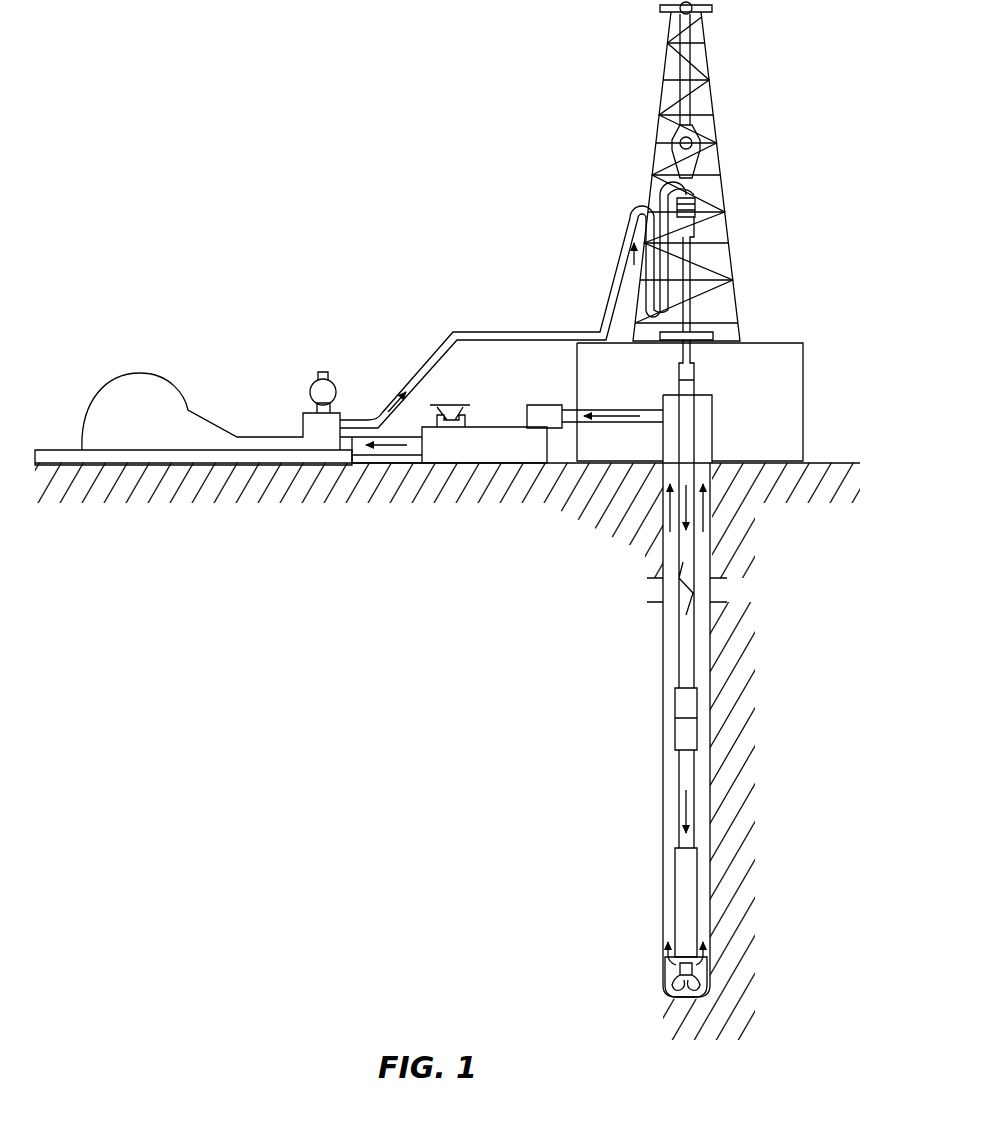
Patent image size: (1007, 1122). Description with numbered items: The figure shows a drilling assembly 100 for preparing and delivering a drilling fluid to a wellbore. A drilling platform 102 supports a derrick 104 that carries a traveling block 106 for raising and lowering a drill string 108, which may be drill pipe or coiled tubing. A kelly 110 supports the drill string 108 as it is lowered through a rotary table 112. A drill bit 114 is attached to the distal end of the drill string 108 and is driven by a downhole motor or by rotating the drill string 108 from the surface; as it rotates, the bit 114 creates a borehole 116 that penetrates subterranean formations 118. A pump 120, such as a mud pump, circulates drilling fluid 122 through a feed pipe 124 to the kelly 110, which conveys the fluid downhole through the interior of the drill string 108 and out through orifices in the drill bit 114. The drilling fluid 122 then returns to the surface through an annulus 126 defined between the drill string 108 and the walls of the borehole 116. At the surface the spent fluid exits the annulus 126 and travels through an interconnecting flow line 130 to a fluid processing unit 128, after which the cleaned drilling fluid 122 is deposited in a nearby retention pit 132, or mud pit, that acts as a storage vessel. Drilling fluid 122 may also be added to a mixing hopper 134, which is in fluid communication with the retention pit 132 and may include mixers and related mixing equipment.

The drilling assembly 100 is at (422, 76).
The drilling platform 102 is at (803, 352).
The derrick 104 is at (712, 93).
The traveling block 106 is at (700, 137).
The drill string 108 is at (690, 565).
The kelly 110 is at (690, 255).
The rotary table 112 is at (713, 336).
The drill bit 114 is at (705, 970).
The borehole 116 is at (712, 650).
The subterranean formations 118 is at (557, 686).
The pump 120 is at (150, 432).
The drilling fluid 122 is at (360, 423).
The feed pipe 124 is at (466, 334).
The annulus 126 is at (700, 800).
The fluid processing unit 128 is at (541, 406).
The flow line 130 is at (647, 421).
The retention pit 132 is at (530, 458).
The mixing hopper 134 is at (437, 414).